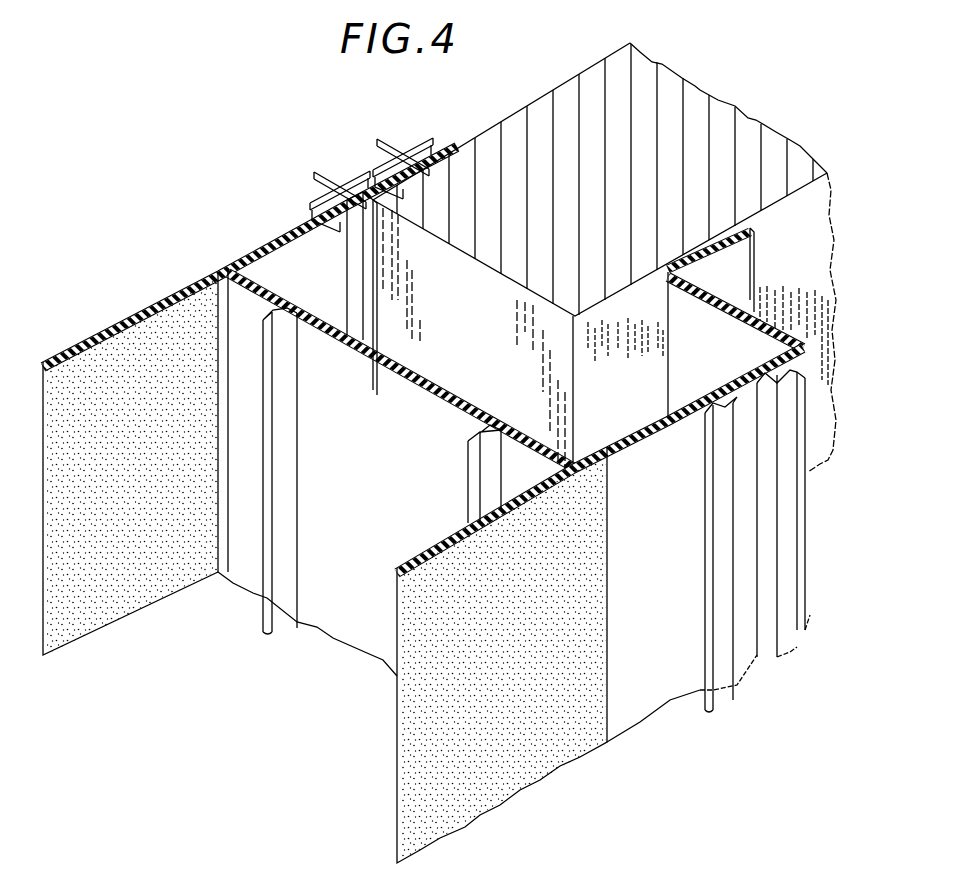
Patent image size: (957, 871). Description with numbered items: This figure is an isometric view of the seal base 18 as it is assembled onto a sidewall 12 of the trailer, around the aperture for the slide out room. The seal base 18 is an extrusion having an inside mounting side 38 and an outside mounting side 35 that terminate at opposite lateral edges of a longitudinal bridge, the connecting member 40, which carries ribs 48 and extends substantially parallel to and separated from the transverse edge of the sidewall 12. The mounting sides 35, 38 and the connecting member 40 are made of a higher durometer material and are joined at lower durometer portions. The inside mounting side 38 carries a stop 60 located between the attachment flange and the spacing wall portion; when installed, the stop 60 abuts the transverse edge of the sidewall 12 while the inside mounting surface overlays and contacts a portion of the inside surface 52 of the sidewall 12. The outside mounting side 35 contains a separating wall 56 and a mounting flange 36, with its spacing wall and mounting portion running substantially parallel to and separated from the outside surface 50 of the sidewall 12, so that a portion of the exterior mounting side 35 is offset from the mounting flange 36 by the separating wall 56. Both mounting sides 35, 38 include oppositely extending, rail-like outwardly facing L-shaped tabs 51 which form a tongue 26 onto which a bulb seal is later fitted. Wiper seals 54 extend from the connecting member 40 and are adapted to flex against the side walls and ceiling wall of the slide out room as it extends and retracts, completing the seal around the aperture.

The sidewall 12 is at (697, 100).
The seal base 18 is at (266, 130).
The tongue 26 is at (800, 666).
The outside mounting side 35 is at (679, 706).
The mounting flange 36 is at (734, 285).
The inside mounting side 38 is at (253, 232).
The connecting member 40 is at (382, 498).
The ribs 48 is at (287, 618).
The outside surface 50 is at (820, 193).
The L-shaped tabs 51 is at (327, 177).
The inside surface 52 is at (505, 110).
The wiper seals 54 is at (68, 648).
The separating wall 56 is at (716, 359).
The stop 60 is at (358, 238).